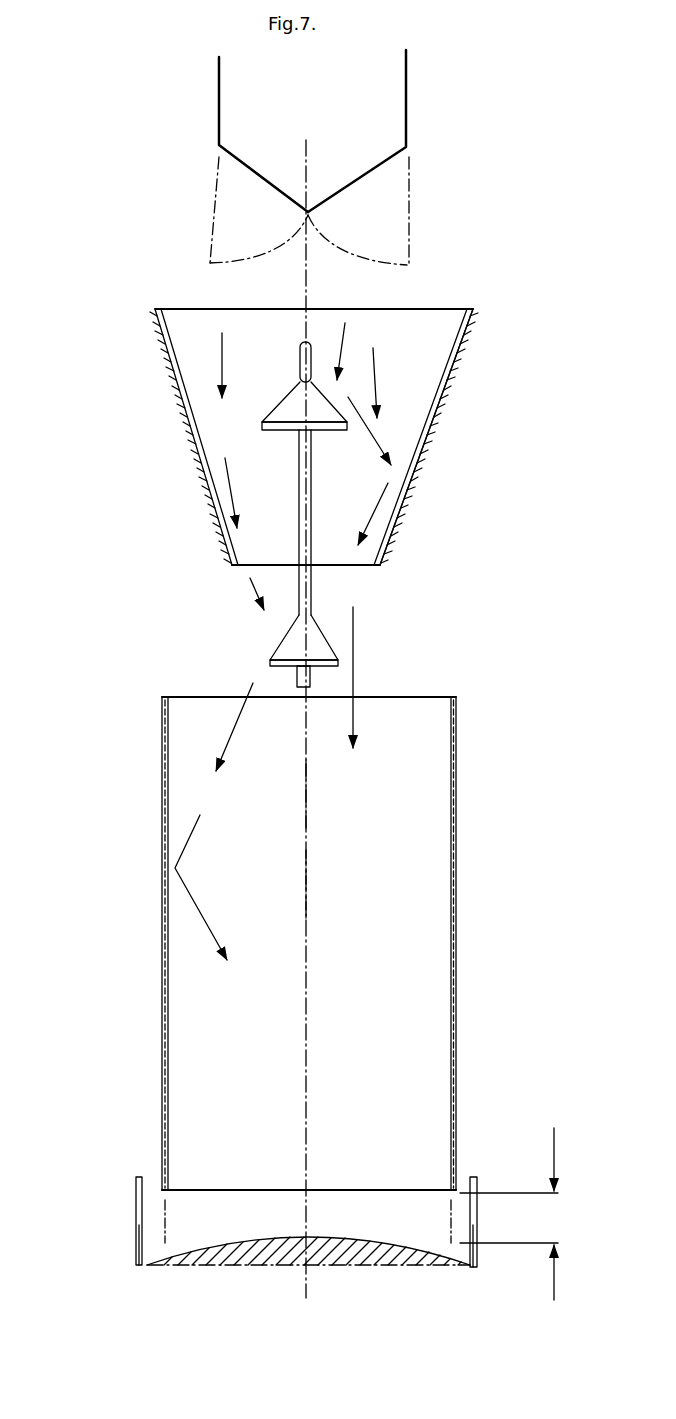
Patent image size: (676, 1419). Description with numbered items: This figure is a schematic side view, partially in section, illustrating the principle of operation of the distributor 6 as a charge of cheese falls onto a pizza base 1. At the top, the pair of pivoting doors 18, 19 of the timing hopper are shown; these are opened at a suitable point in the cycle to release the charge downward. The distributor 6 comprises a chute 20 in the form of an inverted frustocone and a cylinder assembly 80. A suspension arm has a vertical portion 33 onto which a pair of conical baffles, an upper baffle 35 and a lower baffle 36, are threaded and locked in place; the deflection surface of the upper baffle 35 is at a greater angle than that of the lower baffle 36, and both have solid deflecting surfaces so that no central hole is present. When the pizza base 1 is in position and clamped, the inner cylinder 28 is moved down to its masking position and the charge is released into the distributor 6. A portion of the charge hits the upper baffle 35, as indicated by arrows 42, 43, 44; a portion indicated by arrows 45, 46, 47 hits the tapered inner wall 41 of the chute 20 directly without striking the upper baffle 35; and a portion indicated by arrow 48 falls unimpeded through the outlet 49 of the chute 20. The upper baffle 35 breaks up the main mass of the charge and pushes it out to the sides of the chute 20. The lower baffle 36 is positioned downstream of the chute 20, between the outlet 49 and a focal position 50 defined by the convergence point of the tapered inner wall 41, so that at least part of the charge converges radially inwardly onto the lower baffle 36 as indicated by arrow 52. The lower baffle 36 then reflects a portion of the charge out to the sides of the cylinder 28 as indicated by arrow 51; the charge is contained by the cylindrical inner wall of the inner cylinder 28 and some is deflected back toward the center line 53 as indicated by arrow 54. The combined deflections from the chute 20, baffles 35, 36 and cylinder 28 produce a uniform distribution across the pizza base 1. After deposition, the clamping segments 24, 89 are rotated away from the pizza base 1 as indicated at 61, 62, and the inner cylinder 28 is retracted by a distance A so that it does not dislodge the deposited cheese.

The pizza base 1 is at (220, 1270).
The distributor 6 is at (527, 524).
The pivoting door 18 is at (370, 172).
The pivoting door 19 is at (248, 171).
The chute 20 is at (168, 372).
The clamping segment 24 is at (478, 1190).
The inner cylinder 28 is at (450, 1215).
The vertical portion 33 is at (298, 518).
The upper baffle 35 is at (246, 426).
The lower baffle 36 is at (268, 645).
The tapered inner wall 41 is at (430, 378).
The arrow 42 is at (348, 335).
The arrow 43 is at (385, 447).
The arrow 44 is at (370, 515).
The arrow 45 is at (377, 375).
The arrow 46 is at (222, 343).
The arrow 47 is at (225, 487).
The arrow 48 is at (353, 642).
The outlet 49 is at (368, 565).
The focal position 50 is at (298, 796).
The arrow 51 is at (240, 715).
The arrow 52 is at (250, 592).
The center line 53 is at (303, 883).
The arrow 54 is at (195, 915).
The rotation indication 61 is at (99, 1206).
The rotation indication 62 is at (505, 1200).
The cylinder assembly 80 is at (158, 805).
The clamping segment 89 is at (131, 1188).